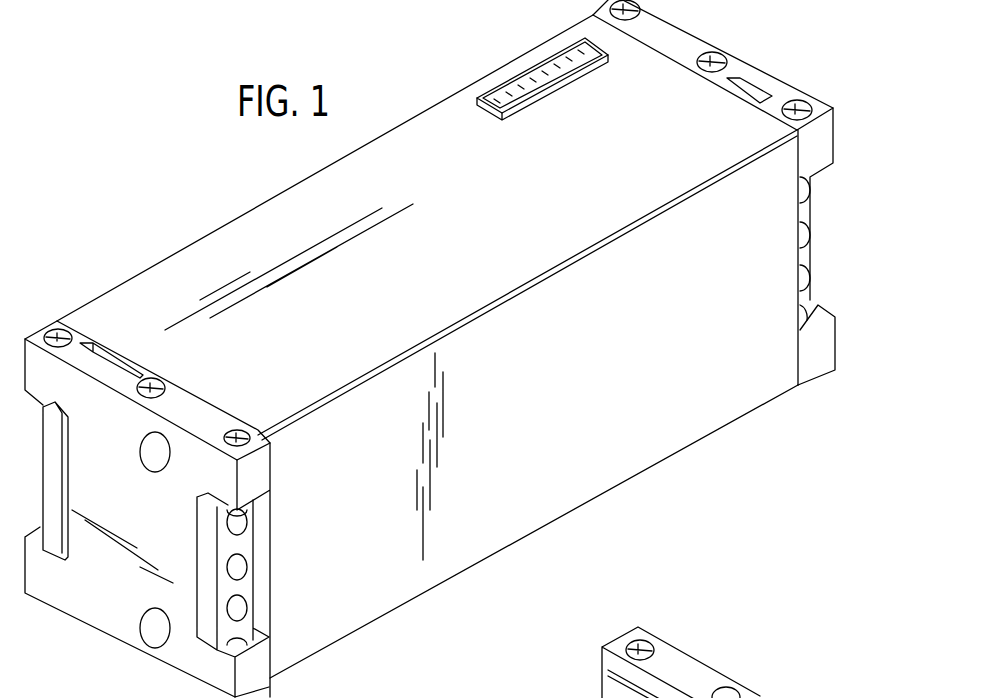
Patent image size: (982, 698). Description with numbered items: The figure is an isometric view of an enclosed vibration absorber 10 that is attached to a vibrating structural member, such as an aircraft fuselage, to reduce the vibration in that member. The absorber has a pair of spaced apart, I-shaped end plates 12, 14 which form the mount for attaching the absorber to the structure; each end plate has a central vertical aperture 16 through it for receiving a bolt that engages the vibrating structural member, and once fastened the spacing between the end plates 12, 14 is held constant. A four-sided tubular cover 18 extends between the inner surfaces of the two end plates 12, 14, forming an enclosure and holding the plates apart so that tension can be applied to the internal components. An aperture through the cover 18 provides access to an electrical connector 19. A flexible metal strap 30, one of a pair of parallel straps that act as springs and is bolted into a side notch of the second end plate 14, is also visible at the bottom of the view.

The vibration absorber 10 is at (583, 535).
The first end plate 12 is at (83, 610).
The second end plate 14 is at (813, 370).
The central vertical aperture 16 is at (157, 382).
The tubular cover 18 is at (222, 238).
The electrical connector 19 is at (497, 93).
The flexible metal strap 30 is at (582, 697).